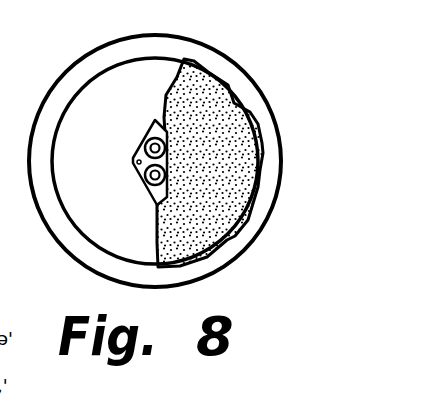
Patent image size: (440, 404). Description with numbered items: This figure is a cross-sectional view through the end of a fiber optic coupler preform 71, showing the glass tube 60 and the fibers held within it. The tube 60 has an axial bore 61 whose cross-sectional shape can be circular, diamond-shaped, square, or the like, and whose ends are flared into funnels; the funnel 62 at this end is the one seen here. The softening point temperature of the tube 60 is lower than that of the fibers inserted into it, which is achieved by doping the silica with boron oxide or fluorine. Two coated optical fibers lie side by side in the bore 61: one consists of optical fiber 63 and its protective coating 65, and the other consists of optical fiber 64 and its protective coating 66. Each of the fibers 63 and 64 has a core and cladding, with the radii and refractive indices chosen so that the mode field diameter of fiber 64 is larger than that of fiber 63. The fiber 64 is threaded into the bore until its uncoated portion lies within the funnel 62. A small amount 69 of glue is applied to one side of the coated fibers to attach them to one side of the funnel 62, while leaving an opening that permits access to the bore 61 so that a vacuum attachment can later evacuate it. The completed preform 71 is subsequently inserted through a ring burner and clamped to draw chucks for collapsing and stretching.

The glass tube 60 is at (140, 165).
The axial bore 61 is at (137, 163).
The funnel 62 is at (115, 238).
The optical fiber 63 is at (166, 148).
The optical fiber 64 is at (165, 173).
The protective coating 65 is at (147, 136).
The protective coating 66 is at (149, 187).
The glue 69 is at (234, 112).
The coupler preform 71 is at (73, 58).